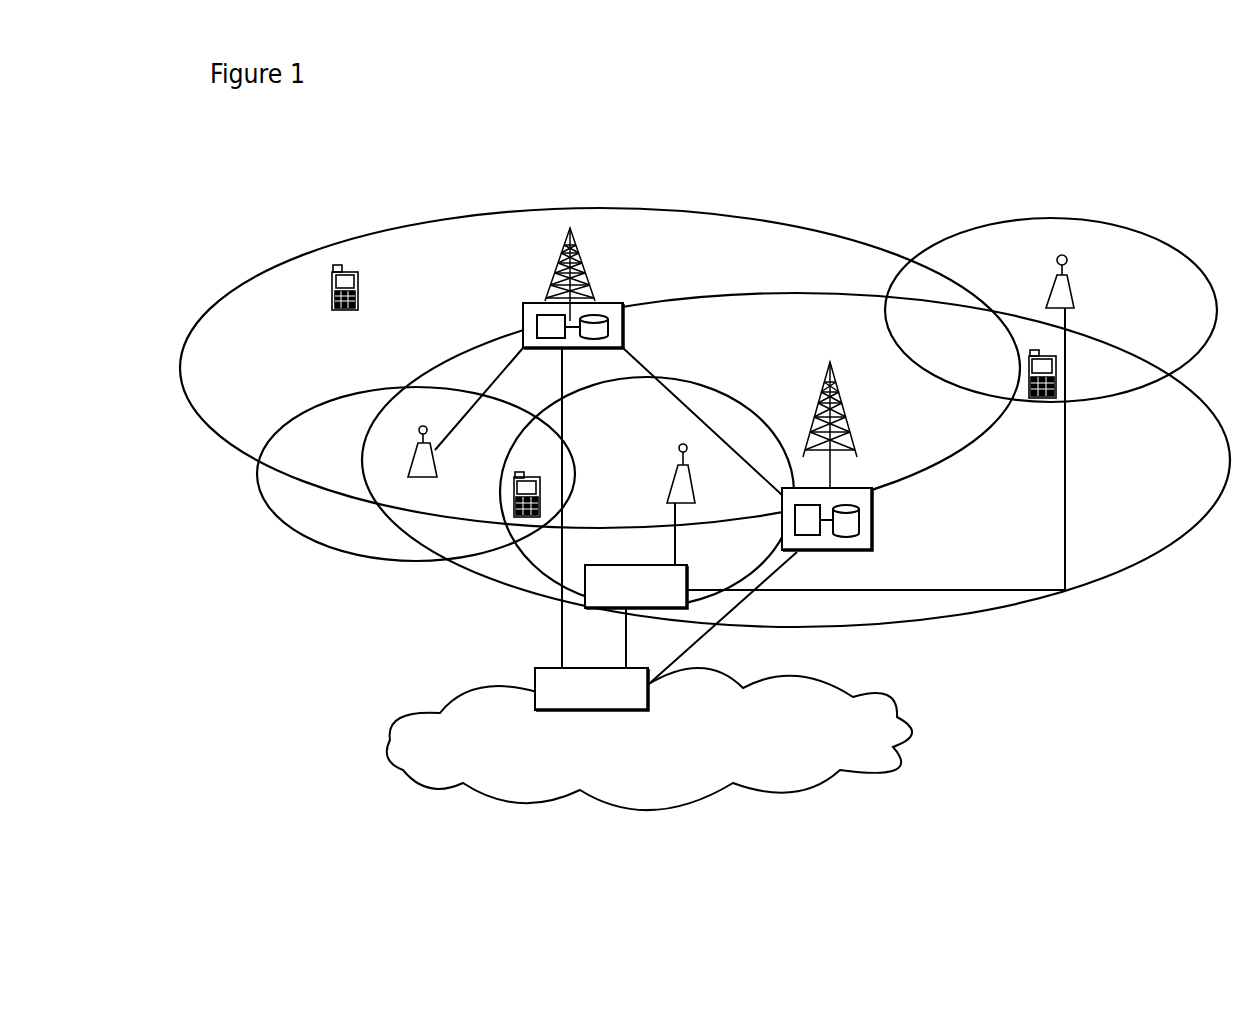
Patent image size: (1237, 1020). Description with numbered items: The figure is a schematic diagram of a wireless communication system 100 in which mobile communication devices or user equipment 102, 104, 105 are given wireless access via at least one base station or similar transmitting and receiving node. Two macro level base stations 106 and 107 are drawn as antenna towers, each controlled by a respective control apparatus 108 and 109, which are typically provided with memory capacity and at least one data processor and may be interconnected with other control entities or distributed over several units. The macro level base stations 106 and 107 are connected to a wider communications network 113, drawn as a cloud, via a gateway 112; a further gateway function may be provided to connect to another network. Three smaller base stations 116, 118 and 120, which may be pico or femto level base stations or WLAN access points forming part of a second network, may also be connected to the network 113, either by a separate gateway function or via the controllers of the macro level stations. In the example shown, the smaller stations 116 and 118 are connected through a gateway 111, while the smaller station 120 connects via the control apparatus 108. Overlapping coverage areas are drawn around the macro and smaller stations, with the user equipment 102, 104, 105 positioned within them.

The wireless communication system 100 is at (268, 252).
The mobile communication device 102 is at (330, 301).
The mobile communication device 104 is at (513, 498).
The mobile communication device 105 is at (1043, 398).
The macro level base station 106 is at (550, 270).
The macro level base station 107 is at (850, 427).
The control apparatus 108 is at (522, 316).
The control apparatus 109 is at (863, 543).
The gateway 111 is at (593, 590).
The gateway 112 is at (537, 667).
The communications network 113 is at (467, 720).
The smaller base station 116 is at (1050, 287).
The smaller base station 118 is at (683, 490).
The smaller base station 120 is at (408, 455).